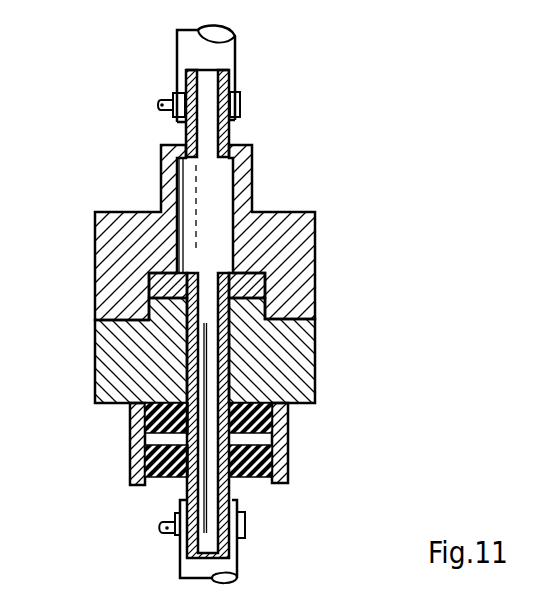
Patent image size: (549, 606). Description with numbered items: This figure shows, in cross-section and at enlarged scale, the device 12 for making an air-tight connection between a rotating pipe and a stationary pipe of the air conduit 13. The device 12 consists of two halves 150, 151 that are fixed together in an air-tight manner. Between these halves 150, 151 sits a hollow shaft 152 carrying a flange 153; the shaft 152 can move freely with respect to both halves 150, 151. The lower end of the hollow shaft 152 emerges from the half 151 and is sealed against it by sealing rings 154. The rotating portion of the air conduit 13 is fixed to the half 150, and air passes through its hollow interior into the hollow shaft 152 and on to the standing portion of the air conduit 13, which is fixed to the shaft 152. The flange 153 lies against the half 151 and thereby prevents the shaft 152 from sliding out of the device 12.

The device 12 is at (91, 224).
The air conduit 13 is at (186, 52).
The half 150 is at (105, 252).
The half 151 is at (105, 362).
The hollow shaft 152 is at (229, 342).
The flange 153 is at (267, 280).
The sealing rings 154 is at (273, 458).